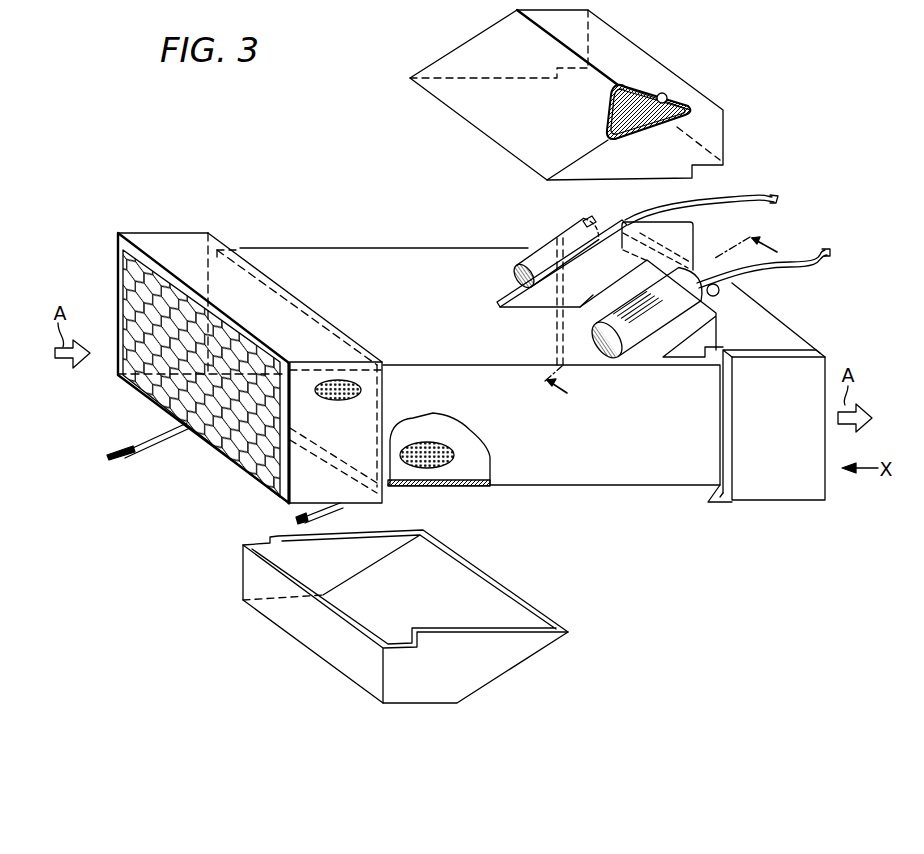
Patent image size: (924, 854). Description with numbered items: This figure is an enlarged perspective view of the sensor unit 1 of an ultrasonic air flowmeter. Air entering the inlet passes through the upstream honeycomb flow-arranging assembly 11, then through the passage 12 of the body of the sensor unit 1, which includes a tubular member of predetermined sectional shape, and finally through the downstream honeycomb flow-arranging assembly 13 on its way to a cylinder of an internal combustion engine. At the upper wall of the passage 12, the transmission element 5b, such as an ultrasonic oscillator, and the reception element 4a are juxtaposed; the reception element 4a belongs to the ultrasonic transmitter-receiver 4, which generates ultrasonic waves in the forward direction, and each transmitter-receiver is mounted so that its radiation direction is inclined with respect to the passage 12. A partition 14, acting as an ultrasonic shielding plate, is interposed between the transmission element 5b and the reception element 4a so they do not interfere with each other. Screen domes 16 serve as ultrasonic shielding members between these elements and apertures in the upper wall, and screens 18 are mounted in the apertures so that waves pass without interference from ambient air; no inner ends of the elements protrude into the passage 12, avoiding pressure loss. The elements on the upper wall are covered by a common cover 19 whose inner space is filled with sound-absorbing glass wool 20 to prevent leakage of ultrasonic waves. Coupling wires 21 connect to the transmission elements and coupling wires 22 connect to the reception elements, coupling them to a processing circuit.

The sensor unit 1 is at (375, 262).
The upstream honeycomb flow-arranging assembly 11 is at (233, 272).
The passage 12 is at (453, 272).
The downstream honeycomb flow-arranging assembly 13 is at (765, 480).
The partition 14 is at (695, 234).
The screen dome 16 is at (543, 258).
The screen 18 is at (346, 385).
The cover 19 is at (642, 67).
The glass wool 20 is at (683, 95).
The coupling wires 21 is at (745, 196).
The coupling wires 22 is at (804, 262).
The reception element 4a is at (718, 320).
The transmission element 5b is at (586, 222).
The ultrasonic transmitter-receiver 4 is at (664, 320).